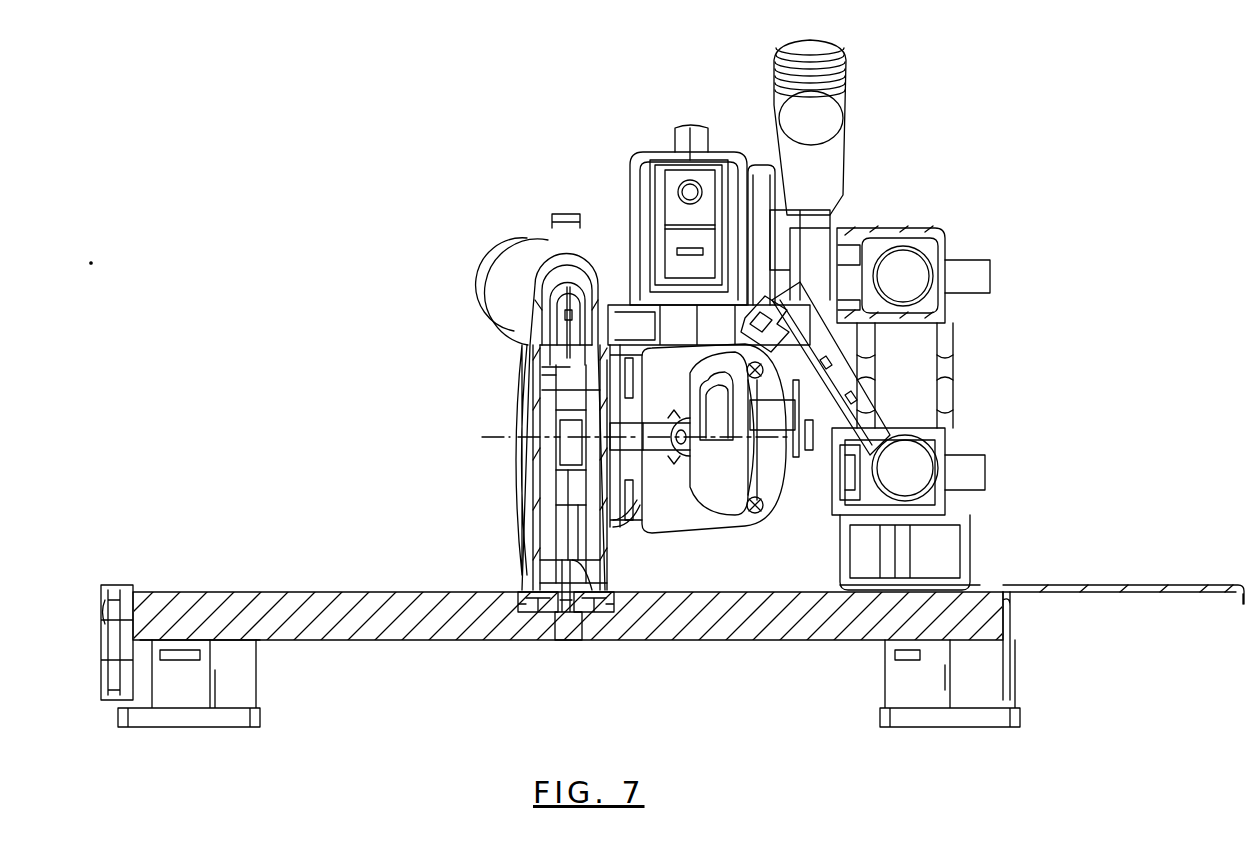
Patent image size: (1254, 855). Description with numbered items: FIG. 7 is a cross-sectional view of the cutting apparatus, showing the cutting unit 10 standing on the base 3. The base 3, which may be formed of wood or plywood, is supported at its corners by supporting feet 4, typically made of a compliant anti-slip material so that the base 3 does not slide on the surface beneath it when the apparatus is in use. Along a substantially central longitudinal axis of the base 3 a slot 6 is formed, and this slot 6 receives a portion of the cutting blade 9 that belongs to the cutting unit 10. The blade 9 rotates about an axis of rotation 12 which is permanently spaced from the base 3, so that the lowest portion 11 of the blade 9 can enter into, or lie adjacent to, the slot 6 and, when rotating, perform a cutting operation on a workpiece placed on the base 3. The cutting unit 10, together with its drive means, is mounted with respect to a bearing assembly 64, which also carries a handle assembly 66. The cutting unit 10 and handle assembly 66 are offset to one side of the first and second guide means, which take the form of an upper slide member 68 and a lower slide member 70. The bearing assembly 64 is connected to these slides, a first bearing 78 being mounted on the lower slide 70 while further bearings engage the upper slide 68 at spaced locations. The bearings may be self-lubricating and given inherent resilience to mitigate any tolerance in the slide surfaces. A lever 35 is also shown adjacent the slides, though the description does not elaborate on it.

The base 3 is at (345, 640).
The supporting feet 4 is at (168, 698).
The slot 6 is at (562, 615).
The cutting blade 9 is at (592, 582).
The cutting unit 10 is at (612, 238).
The lowest portion of the blade 11 is at (562, 600).
The axis of rotation 12 is at (490, 440).
The lever 35 is at (850, 400).
The bearing assembly 64 is at (870, 355).
The handle assembly 66 is at (846, 43).
The upper slide member 68 is at (915, 265).
The lower slide member 70 is at (910, 455).
The first bearing 78 is at (940, 498).